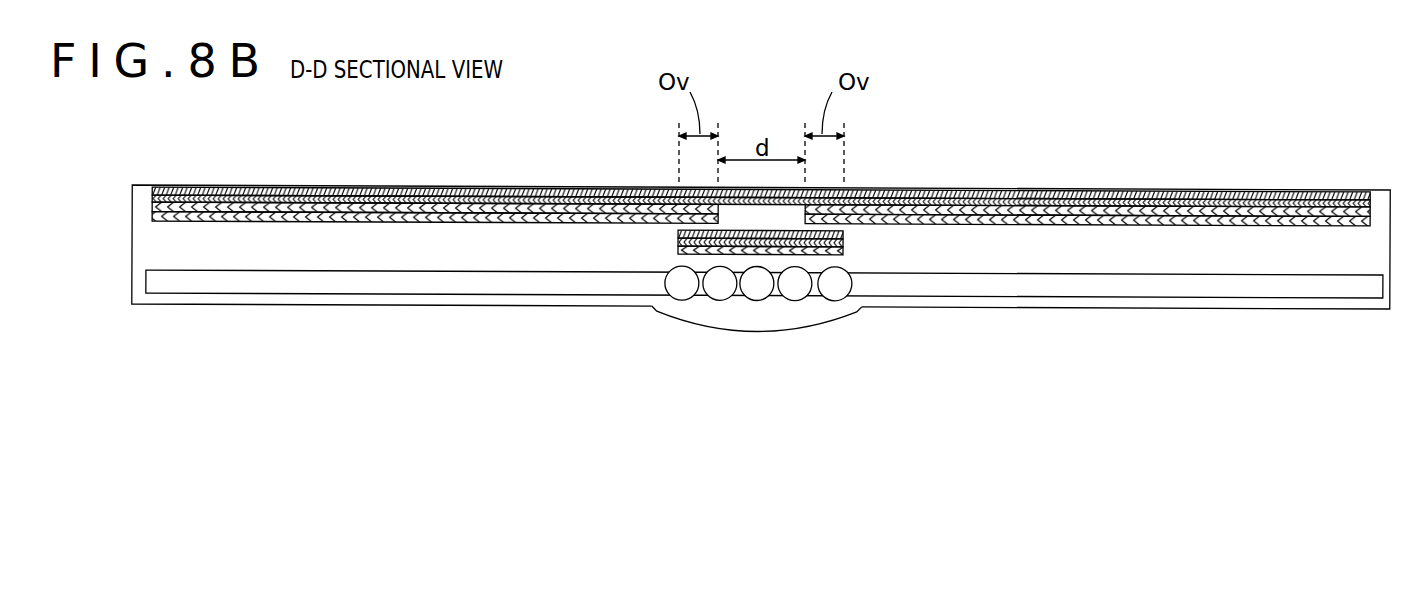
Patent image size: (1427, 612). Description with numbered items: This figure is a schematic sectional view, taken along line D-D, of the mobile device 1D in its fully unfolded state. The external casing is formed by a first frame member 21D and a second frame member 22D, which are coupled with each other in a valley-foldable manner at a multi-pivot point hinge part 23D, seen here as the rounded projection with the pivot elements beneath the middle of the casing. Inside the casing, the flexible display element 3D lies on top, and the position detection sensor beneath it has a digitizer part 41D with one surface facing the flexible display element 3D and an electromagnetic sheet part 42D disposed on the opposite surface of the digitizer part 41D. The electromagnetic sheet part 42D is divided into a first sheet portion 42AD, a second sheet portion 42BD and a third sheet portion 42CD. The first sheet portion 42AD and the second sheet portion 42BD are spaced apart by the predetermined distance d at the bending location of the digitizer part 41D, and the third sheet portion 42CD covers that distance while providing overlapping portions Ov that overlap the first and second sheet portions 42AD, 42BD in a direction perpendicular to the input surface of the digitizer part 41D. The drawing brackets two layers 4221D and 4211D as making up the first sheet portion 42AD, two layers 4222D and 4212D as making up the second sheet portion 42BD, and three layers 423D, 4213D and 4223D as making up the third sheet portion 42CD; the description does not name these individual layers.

The mobile device 1D is at (992, 187).
The flexible display element 3D is at (301, 187).
The digitizer part 41D is at (223, 187).
The electromagnetic sheet part 42D is at (1373, 214).
The first sheet portion 42AD is at (507, 92).
The first counter substrate 4221D is at (389, 205).
The first array substrate 4211D is at (402, 218).
The second sheet portion 42BD is at (1207, 92).
The second counter substrate 4222D is at (1088, 210).
The second array substrate 4212D is at (1102, 220).
The third sheet portion 42CD is at (517, 325).
The third polarizing plate 423D is at (678, 232).
The third array substrate 4213D is at (678, 242).
The third counter substrate 4223D is at (678, 252).
The first frame member 21D is at (270, 305).
The second frame member 22D is at (1052, 309).
The multi-pivot point hinge part 23D is at (833, 329).